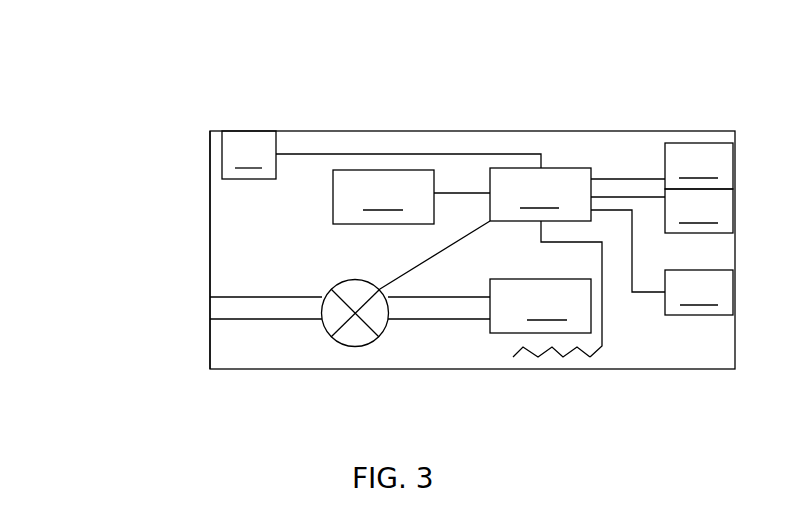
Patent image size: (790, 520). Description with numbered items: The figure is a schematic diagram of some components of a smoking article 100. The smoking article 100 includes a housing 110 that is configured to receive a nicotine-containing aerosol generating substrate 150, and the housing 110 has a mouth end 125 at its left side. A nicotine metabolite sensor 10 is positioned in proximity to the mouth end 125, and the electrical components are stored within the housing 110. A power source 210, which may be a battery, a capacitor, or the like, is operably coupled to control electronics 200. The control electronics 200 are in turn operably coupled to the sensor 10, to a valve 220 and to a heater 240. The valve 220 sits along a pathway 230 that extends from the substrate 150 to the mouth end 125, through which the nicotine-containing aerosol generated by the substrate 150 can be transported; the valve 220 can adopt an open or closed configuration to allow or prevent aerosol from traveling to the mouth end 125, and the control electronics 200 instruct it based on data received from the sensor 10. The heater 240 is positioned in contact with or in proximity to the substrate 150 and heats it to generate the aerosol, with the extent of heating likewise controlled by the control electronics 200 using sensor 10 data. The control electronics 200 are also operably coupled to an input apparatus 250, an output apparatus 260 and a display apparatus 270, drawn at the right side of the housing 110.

The smoking article 100 is at (171, 85).
The housing 110 is at (472, 131).
The mouth end 125 is at (206, 213).
The nicotine metabolite sensor 10 is at (249, 155).
The power source 210 is at (383, 197).
The control electronics 200 is at (540, 194).
The input apparatus 250 is at (699, 166).
The output apparatus 260 is at (699, 211).
The display apparatus 270 is at (699, 292).
The nicotine-containing aerosol generating substrate 150 is at (540, 306).
The conduit 230 is at (243, 311).
The valve 220 is at (355, 346).
The heater 240 is at (590, 357).